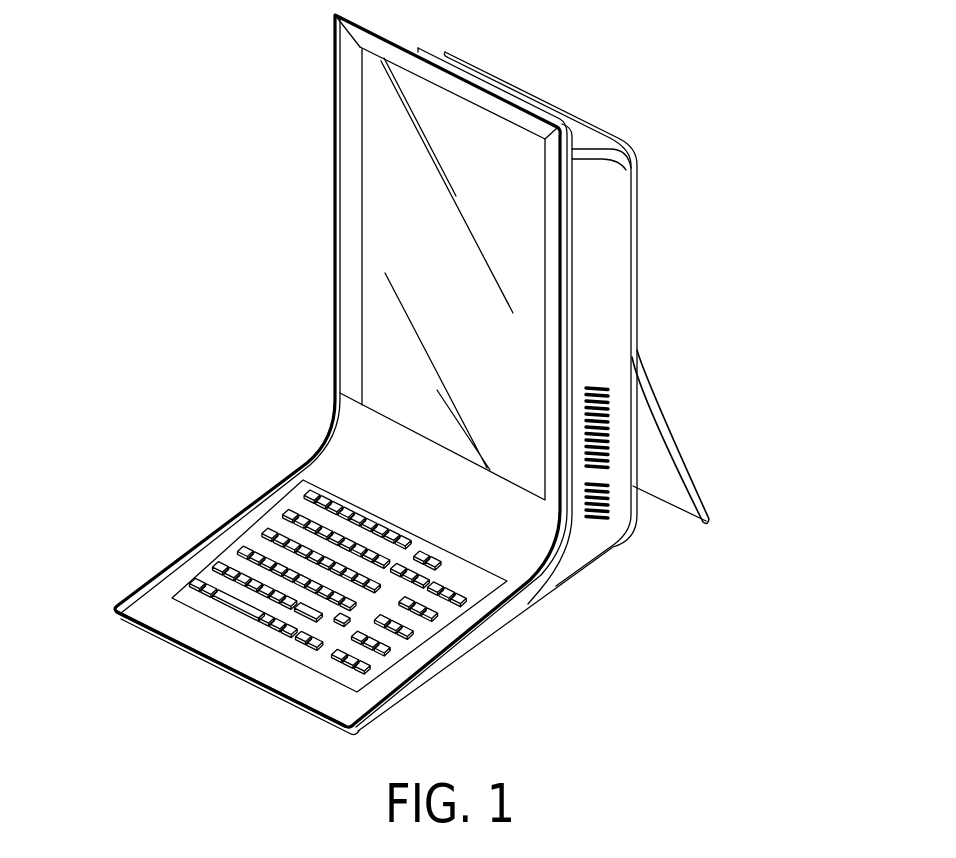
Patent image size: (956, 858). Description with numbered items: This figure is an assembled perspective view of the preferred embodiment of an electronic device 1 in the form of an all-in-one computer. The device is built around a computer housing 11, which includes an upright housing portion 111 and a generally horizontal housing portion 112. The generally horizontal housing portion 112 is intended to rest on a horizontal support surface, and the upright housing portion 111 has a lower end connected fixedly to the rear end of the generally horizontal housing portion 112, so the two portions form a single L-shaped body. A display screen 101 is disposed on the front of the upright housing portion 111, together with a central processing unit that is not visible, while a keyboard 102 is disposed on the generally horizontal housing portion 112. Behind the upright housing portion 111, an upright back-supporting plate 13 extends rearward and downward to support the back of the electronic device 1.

The electronic device 1 is at (762, 172).
The computer housing 11 is at (605, 176).
The upright housing portion 111 is at (607, 278).
The upright back-supporting plate 13 is at (682, 458).
The display screen 101 is at (383, 355).
The keyboard 102 is at (482, 585).
The generally horizontal housing portion 112 is at (462, 649).